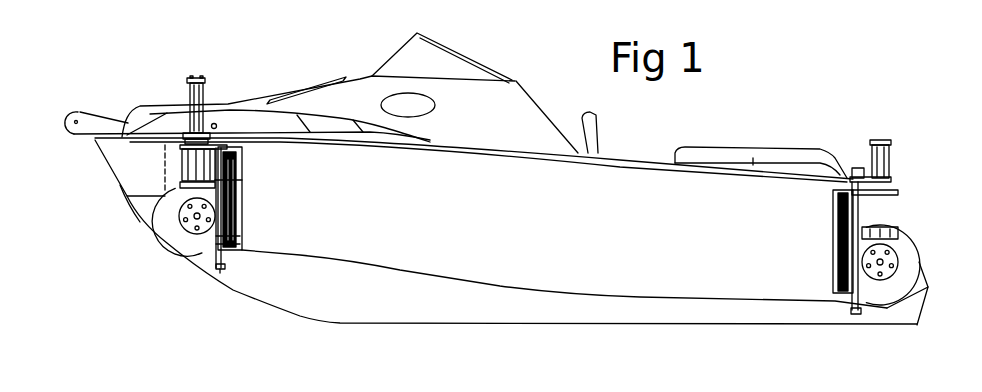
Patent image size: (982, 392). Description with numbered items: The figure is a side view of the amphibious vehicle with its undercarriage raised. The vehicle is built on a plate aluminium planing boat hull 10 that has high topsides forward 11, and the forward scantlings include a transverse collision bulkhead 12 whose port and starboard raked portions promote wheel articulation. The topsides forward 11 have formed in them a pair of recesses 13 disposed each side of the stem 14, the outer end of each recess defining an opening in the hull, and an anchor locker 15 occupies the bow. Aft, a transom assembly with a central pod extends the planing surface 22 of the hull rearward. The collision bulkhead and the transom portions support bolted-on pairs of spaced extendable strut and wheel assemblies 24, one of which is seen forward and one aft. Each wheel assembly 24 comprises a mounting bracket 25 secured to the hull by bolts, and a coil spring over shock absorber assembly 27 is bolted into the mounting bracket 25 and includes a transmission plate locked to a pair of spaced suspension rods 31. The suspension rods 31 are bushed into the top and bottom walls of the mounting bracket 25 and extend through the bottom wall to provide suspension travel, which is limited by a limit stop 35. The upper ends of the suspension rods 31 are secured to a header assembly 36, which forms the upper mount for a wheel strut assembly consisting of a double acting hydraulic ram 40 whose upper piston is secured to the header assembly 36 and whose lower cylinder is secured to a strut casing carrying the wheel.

The planing boat hull 10 is at (587, 228).
The topsides forward 11 is at (338, 158).
The transverse collision bulkhead 12 is at (247, 206).
The recesses 13 is at (176, 166).
The stem 14 is at (128, 219).
The anchor locker 15 is at (131, 169).
The planing surface 22 is at (888, 326).
The extendable strut and wheel assembly 24 is at (185, 243).
The mounting bracket 25 is at (242, 163).
The coil spring over shock absorber assembly 27 is at (243, 180).
The suspension rods 31 is at (228, 232).
The limit stop 35 is at (218, 274).
The header assembly 36 is at (216, 124).
The double acting hydraulic ram 40 is at (208, 101).